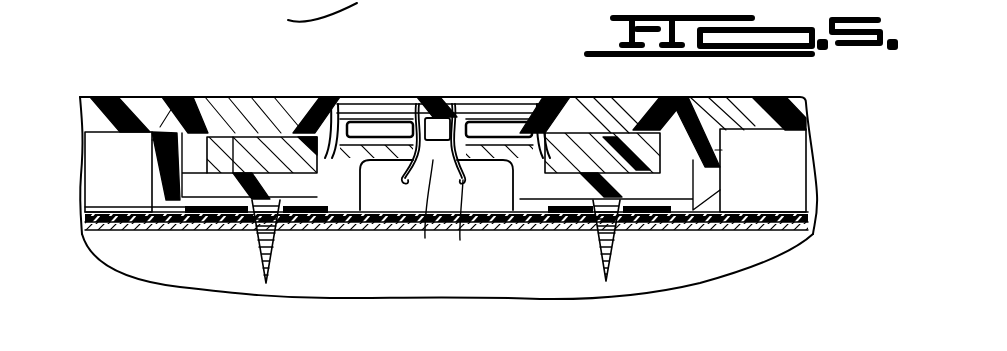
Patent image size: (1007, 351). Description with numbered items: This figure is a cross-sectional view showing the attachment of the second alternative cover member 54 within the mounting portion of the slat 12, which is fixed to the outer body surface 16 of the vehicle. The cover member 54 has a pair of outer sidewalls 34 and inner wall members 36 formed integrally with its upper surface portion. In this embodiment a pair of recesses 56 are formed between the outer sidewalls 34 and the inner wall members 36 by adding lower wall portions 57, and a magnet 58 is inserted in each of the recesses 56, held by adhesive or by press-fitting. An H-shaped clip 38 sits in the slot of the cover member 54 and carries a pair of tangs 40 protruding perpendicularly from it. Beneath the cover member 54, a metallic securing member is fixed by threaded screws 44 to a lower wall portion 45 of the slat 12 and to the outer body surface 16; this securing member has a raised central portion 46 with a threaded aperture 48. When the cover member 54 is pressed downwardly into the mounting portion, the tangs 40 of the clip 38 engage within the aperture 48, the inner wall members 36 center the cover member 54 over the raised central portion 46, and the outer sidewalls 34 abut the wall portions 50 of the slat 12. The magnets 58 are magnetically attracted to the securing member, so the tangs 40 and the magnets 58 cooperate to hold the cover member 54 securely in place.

The slat 12 is at (127, 100).
The outer body surface 16 is at (745, 230).
The outer sidewalls 34 is at (148, 151).
The inner wall members 36 is at (343, 142).
The clip 38 is at (464, 113).
The tangs 40 is at (412, 181).
The threaded screws 44 is at (260, 248).
The lower wall portion 45 is at (100, 212).
The raised central portion 46 is at (500, 137).
The aperture 48 is at (417, 214).
The wall portions 50 is at (183, 100).
The cover member 54 is at (384, 96).
The recesses 56 is at (226, 142).
The lower wall portions 57 is at (292, 212).
The magnets 58 is at (162, 178).